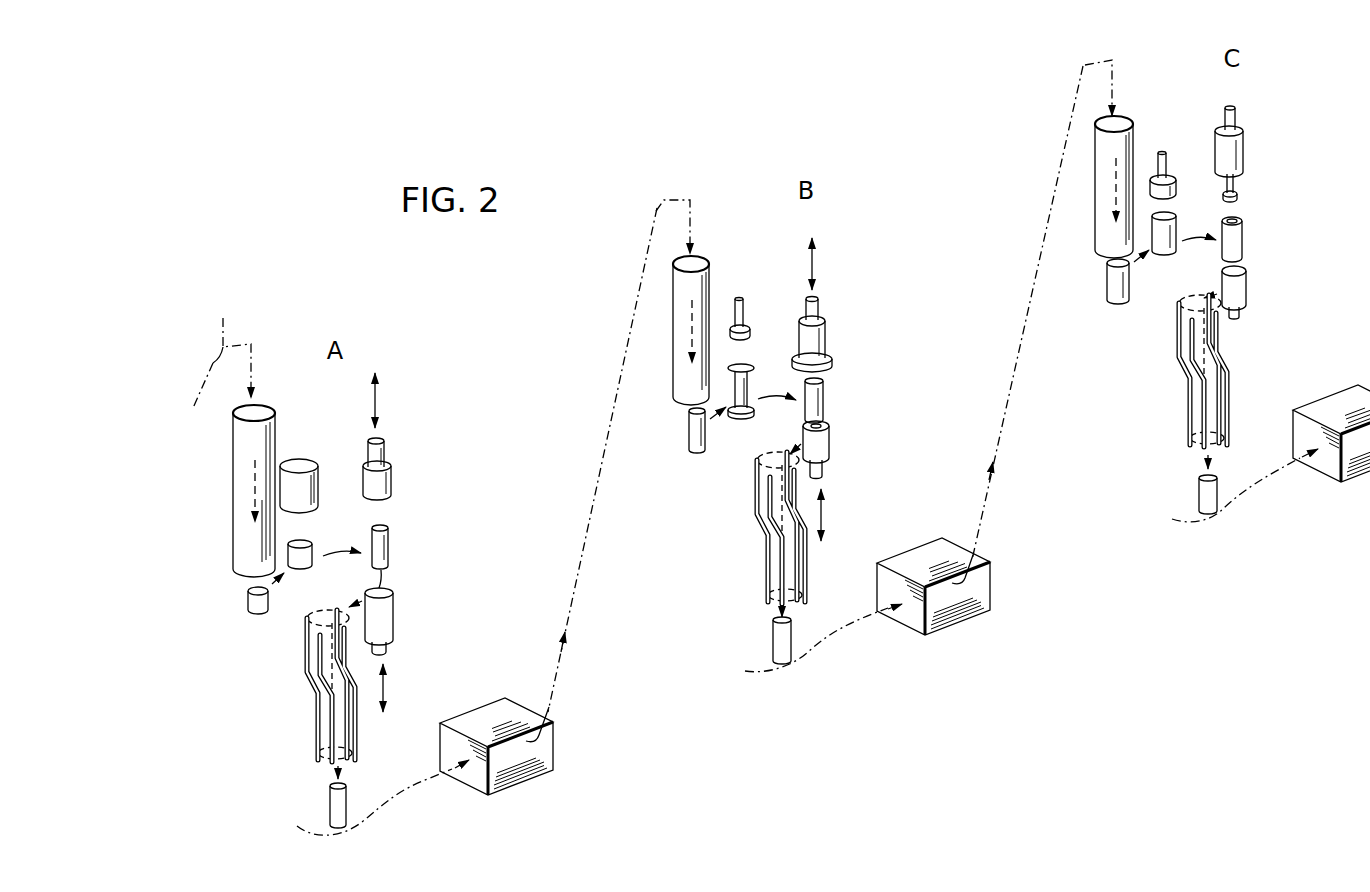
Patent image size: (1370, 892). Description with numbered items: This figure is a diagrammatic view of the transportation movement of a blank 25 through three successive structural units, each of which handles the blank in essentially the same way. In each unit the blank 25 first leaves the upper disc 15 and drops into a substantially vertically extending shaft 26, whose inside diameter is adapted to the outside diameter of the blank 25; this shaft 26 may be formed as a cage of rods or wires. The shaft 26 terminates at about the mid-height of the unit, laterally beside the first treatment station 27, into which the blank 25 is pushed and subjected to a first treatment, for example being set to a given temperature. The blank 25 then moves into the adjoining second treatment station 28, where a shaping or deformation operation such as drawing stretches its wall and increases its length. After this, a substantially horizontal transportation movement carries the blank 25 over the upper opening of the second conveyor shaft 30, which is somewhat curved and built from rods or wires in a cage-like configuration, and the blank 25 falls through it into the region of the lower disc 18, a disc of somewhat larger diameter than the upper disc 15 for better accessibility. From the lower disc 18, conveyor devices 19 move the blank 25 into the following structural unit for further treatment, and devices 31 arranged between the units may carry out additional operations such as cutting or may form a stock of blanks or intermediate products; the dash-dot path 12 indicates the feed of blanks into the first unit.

The transport path 12 is at (209, 395).
The upper disc 15 is at (1085, 65).
The lower disc 18 is at (354, 822).
The conveyor devices 19 is at (589, 523).
The blank 25 is at (391, 545).
The shaft 26 is at (245, 494).
The first treatment station 27 is at (305, 446).
The second treatment station 28 is at (400, 447).
The second conveyor shaft 30 is at (306, 662).
The devices 31 is at (483, 716).